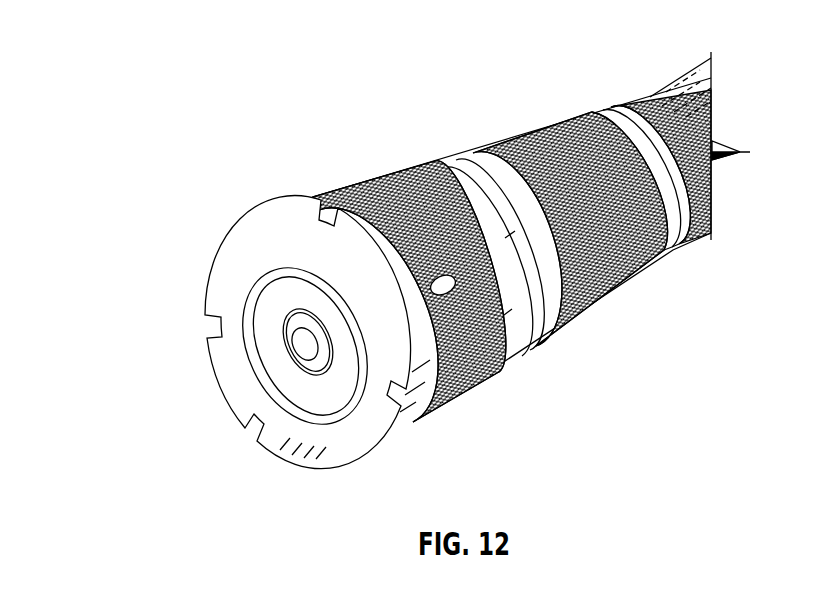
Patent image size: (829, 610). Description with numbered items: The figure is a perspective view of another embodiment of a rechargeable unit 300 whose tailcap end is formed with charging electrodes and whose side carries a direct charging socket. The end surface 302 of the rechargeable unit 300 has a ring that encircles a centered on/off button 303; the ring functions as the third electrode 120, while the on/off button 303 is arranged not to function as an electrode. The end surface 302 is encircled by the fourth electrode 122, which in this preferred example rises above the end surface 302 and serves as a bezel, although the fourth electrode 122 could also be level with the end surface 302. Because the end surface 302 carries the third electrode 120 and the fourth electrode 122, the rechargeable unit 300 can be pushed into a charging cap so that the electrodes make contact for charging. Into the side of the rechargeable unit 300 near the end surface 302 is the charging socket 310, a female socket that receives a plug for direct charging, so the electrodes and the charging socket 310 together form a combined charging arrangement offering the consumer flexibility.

The rechargeable unit 300 is at (153, 53).
The fourth electrode 122 is at (321, 226).
The end surface 302 is at (272, 290).
The third electrode 120 is at (250, 341).
The on/off button 303 is at (306, 343).
The charging socket 310 is at (501, 361).